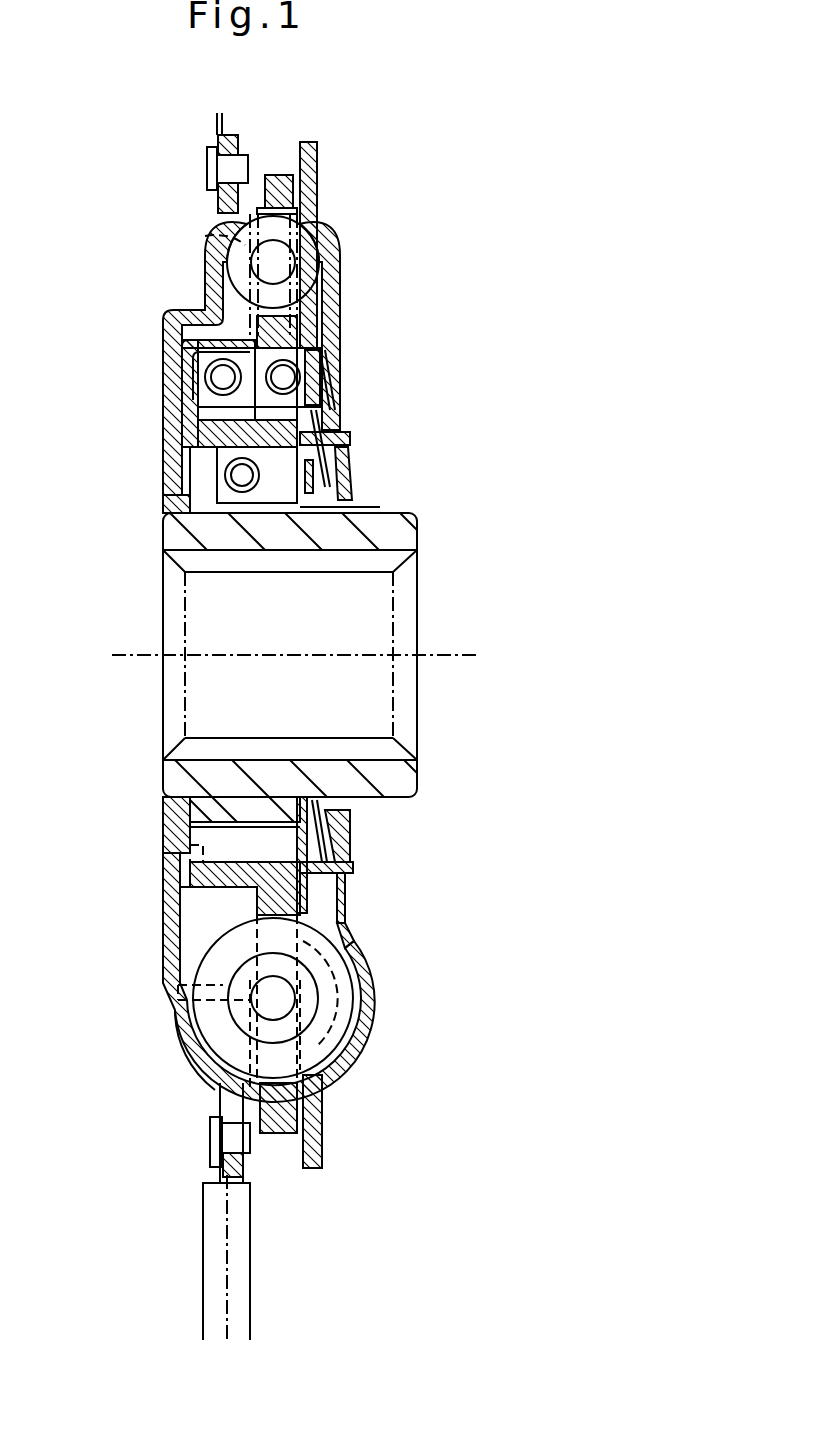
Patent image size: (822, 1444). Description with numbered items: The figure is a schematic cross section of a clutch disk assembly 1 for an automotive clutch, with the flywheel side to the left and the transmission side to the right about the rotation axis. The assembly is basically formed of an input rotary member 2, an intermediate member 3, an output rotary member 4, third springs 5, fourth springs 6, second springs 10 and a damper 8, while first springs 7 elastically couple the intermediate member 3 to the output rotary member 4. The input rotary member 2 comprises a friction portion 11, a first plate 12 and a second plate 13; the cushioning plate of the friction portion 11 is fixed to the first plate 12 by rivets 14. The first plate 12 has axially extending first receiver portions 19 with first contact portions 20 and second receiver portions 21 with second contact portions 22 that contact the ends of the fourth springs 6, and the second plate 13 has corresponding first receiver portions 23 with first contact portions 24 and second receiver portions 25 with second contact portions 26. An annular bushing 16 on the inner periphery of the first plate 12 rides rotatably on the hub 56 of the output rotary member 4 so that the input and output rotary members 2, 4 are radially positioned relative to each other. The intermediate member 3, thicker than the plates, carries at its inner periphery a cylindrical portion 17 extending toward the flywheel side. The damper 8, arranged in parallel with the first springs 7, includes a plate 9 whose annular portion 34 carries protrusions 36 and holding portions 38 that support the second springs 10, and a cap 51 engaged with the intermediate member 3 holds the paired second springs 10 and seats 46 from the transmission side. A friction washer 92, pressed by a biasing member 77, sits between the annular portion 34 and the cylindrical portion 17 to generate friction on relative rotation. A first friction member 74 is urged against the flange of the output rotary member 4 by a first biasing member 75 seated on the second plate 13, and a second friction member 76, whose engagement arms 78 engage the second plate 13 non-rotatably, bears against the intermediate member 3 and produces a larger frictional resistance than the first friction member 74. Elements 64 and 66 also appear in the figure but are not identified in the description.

The clutch disk assembly 1 is at (482, 221).
The input rotary member 2 is at (170, 172).
The intermediate member 3 is at (310, 306).
The output rotary member 4 is at (424, 526).
The third springs 5 is at (340, 973).
The fourth springs 6 is at (273, 227).
The first springs 7 is at (194, 471).
The damper 8 is at (188, 335).
The plate 9 is at (183, 386).
The second springs 10 is at (198, 343).
The friction portion 11 is at (203, 1250).
The first plate 12 is at (166, 916).
The second plate 13 is at (340, 901).
The rivets 14 is at (206, 150).
The annular bushing 16 is at (183, 497).
The cylindrical portion 17 is at (205, 447).
The first receiver portions 19 is at (176, 1019).
The first contact portions 20 is at (172, 1063).
The second receiver portions 21 is at (212, 222).
The second contact portions 22 is at (205, 236).
The first receiver portions 23 is at (366, 986).
The first contact portions 24 is at (367, 1058).
The second receiver portions 25 is at (340, 241).
The second contact portions 26 is at (340, 279).
The annular member 34 is at (205, 395).
The protrusion 36 is at (195, 368).
The holding portion 38 is at (200, 352).
The seats 46 is at (203, 291).
The cap 51 is at (320, 367).
The hub 56 is at (390, 511).
The cylinder bore 64 is at (340, 565).
The upper end plate 66 is at (220, 503).
The first friction member 74 is at (368, 530).
The first biasing member 75 is at (345, 491).
The second friction member 76 is at (328, 396).
The biasing member 77 is at (330, 419).
The engagement arms 78 is at (350, 438).
The friction washer 92 is at (195, 889).